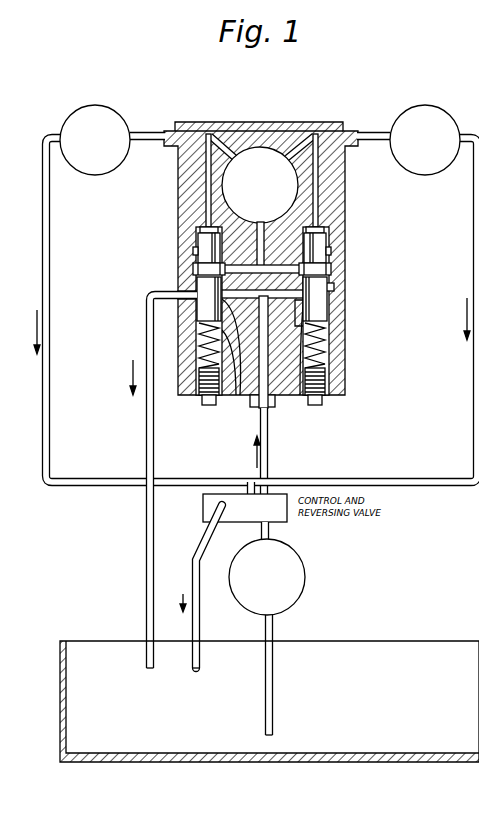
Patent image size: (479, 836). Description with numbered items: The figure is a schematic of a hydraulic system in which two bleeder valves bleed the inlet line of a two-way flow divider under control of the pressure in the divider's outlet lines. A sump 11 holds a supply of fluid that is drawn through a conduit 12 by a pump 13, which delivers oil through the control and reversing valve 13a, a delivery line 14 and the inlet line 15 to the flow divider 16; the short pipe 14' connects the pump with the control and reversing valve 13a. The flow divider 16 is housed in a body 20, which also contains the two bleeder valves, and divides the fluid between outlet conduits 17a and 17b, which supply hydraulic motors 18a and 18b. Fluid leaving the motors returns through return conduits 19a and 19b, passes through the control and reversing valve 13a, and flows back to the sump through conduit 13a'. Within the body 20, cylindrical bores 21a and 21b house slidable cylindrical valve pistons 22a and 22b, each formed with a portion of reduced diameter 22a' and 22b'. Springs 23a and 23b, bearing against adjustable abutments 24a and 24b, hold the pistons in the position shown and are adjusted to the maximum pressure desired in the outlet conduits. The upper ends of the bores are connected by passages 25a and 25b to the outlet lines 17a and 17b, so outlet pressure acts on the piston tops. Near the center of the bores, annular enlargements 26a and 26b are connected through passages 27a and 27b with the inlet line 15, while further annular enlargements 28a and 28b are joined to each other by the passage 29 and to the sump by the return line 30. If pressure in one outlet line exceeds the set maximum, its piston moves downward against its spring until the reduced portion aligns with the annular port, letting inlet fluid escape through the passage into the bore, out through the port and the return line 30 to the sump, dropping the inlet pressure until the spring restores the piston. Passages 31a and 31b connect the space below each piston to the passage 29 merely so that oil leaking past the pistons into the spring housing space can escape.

The sump 11 is at (60, 679).
The conduit 12 is at (274, 632).
The pump 13 is at (292, 554).
The control and reversing valve 13a is at (245, 508).
The conduit 13a' is at (191, 586).
The delivery line 14 is at (275, 395).
The pipe from pump to valve 14' is at (241, 532).
The inlet line 15 is at (343, 200).
The flow divider 16 is at (262, 147).
The outlet conduit 17a is at (148, 132).
The outlet conduit 17b is at (368, 132).
The hydraulic motor 18a is at (106, 96).
The hydraulic motor 18b is at (426, 106).
The return conduit 19a is at (53, 428).
The return conduit 19b is at (473, 400).
The body 20 is at (292, 122).
The cylindrical bore 21a is at (198, 240).
The cylindrical bore 21b is at (327, 233).
The valve piston 22a is at (162, 247).
The valve piston 22b is at (361, 225).
The portion of reduced diameter 22a' is at (156, 290).
The portion of reduced diameter 22b' is at (364, 281).
The spring 23a is at (198, 340).
The spring 23b is at (329, 336).
The adjustable abutment 24a is at (201, 398).
The adjustable abutment 24b is at (329, 385).
The passage 25a is at (206, 166).
The passage 25b is at (318, 170).
The annular enlargement 26a is at (193, 268).
The annular enlargement 26b is at (331, 268).
The passage 27a is at (200, 226).
The passage 27b is at (327, 243).
The annular enlargement 28a is at (197, 305).
The annular enlargement 28b is at (327, 300).
The passage 29 is at (250, 396).
The return line 30 is at (146, 532).
The passage 31a is at (238, 396).
The passage 31b is at (329, 353).